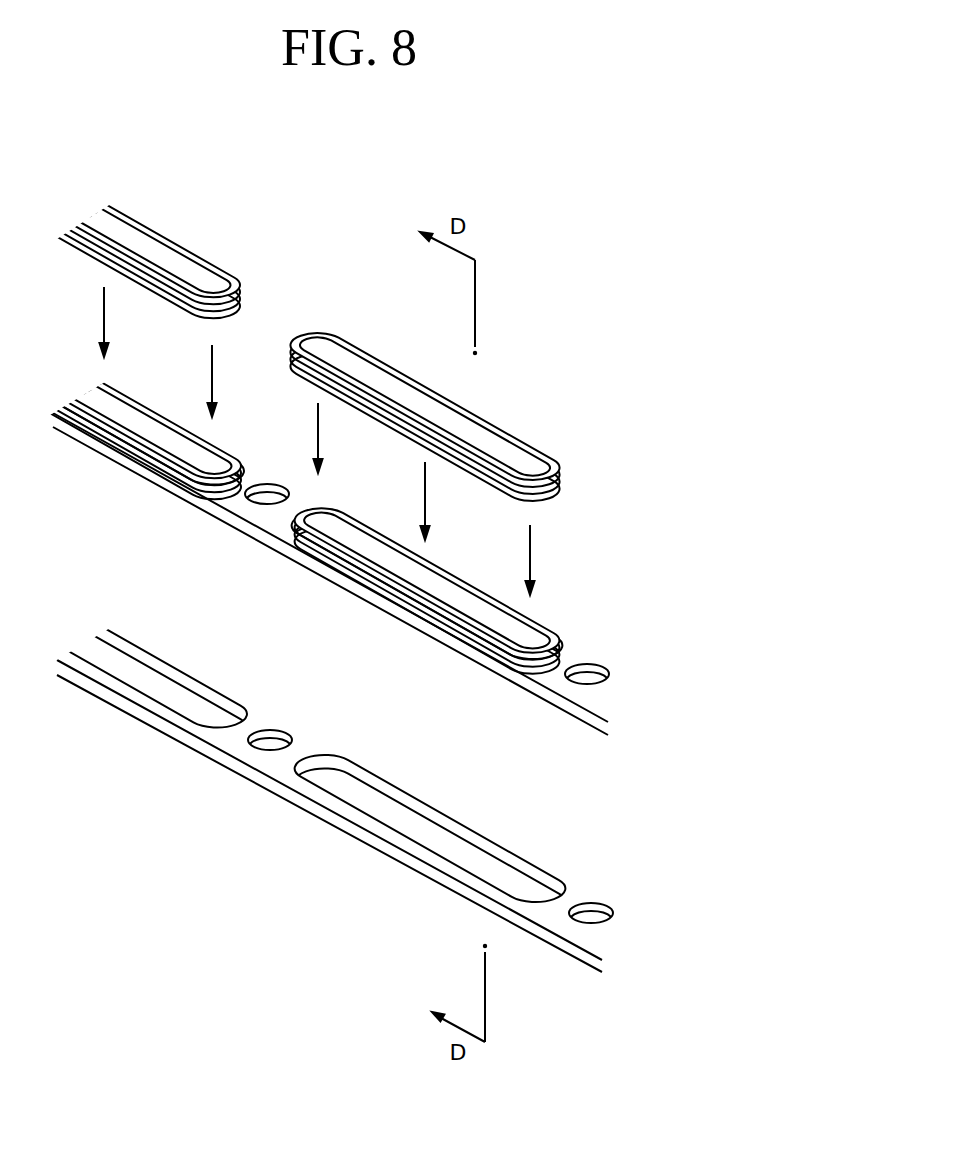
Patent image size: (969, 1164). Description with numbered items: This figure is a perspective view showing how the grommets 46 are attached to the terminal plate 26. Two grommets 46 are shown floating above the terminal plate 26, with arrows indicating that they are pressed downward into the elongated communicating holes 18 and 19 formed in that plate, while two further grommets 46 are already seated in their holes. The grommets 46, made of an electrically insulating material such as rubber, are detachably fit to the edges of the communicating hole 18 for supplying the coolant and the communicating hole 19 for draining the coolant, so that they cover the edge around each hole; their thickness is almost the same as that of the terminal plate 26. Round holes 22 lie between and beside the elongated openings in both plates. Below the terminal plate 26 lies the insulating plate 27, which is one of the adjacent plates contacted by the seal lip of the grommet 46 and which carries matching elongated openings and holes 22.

The communicating hole for supplying the coolant 18 is at (184, 461).
The communicating hole for draining the coolant 19 is at (493, 641).
The hole 22 is at (268, 730).
The terminal plate 26 is at (600, 703).
The insulating plate 27 is at (610, 944).
The grommet 46 is at (224, 267).